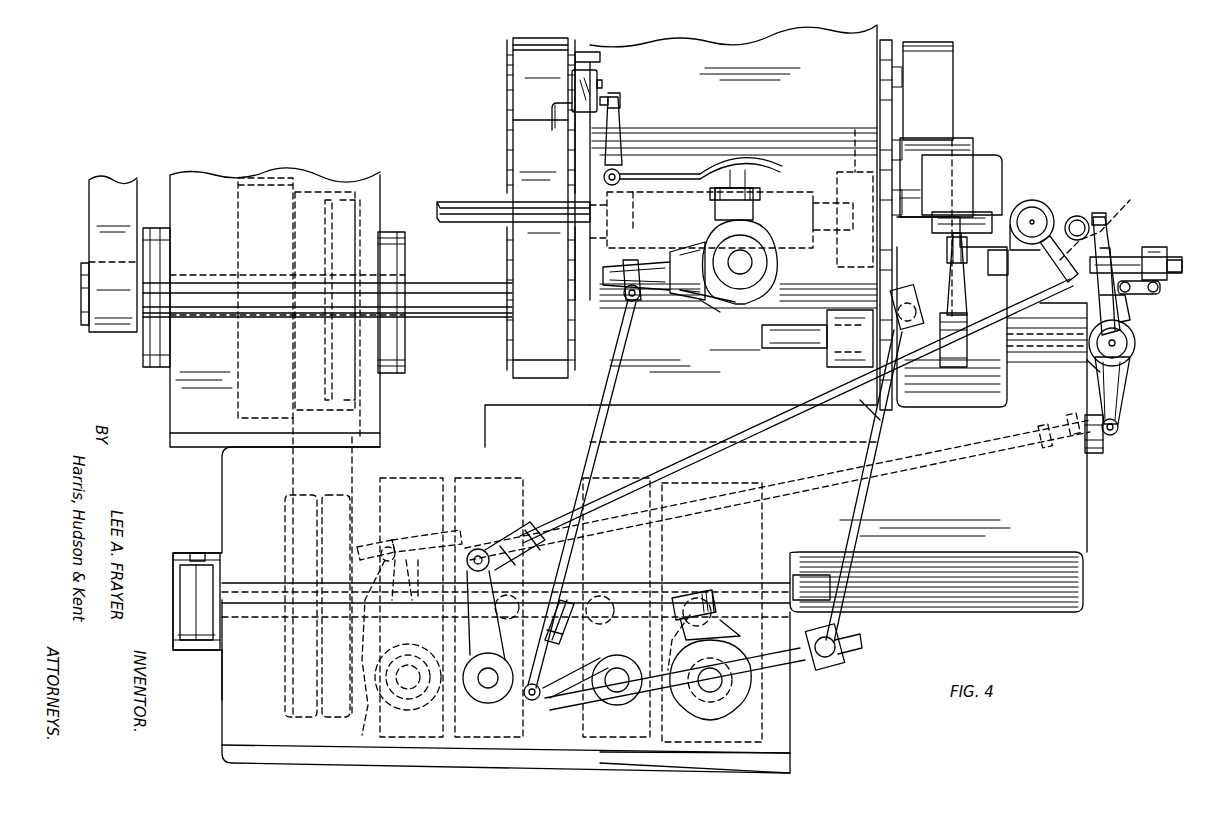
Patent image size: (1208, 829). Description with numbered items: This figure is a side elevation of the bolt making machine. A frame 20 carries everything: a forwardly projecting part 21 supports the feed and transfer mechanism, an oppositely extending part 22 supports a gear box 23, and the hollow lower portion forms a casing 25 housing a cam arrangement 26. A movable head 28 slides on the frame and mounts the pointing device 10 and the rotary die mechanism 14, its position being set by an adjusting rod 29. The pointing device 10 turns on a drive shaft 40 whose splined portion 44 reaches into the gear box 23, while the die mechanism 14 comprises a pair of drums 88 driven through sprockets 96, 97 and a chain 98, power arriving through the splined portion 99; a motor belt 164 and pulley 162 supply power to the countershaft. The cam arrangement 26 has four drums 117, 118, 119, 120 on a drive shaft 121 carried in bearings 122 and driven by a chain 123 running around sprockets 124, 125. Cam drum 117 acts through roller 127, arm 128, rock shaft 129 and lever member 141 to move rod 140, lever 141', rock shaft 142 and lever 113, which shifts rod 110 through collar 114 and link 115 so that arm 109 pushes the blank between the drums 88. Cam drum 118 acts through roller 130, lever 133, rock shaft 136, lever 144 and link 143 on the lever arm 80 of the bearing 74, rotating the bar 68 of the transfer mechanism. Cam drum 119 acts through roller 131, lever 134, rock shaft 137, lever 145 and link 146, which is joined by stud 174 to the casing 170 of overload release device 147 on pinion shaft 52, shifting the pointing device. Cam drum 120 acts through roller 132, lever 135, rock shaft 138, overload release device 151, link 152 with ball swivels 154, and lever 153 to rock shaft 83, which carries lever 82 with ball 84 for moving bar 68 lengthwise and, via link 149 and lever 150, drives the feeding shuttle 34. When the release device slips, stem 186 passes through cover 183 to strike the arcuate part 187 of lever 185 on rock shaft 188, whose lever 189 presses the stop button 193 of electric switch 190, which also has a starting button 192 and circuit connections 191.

The belt 164 is at (104, 211).
The pulley 162 is at (80, 332).
The gear box 23 is at (172, 420).
The sprocket or pulley 125 is at (308, 400).
The splined portion of shaft 99 is at (450, 320).
The oppositely extending part of frame 22 is at (224, 474).
The frame 20 is at (224, 686).
The casing 25 is at (790, 736).
The cam arrangement 26 is at (765, 724).
The bearings 122 is at (176, 563).
The drive shaft 121 is at (268, 612).
The sprocket or pulley 124 is at (285, 528).
The chain or belt 123 is at (353, 483).
The cam drum 117 is at (400, 478).
The cam drum 118 is at (480, 478).
The cam drum 119 is at (590, 480).
The cam drum 120 is at (695, 482).
The rock shaft 129 is at (390, 713).
The member 141 is at (366, 650).
The roller 127 is at (388, 561).
The arm 128 is at (428, 556).
The lever 144 is at (478, 549).
The rock shaft 136 is at (490, 704).
The lever 133 is at (488, 684).
The roller 130 is at (512, 596).
The roller 131 is at (605, 596).
The roller 132 is at (690, 598).
The lever 135 is at (718, 594).
The lever 134 is at (575, 645).
The lever 145 is at (540, 702).
The rock shaft 137 is at (620, 704).
The rock shaft 138 is at (705, 700).
The overload release device 151 is at (785, 692).
The ball swivels 154 is at (820, 668).
The link 146 is at (598, 416).
The link 143 is at (800, 398).
The link 152 is at (860, 500).
The lever 153 is at (880, 412).
The rod 140 is at (925, 462).
The sprocket or pulley 97 is at (513, 58).
The chain or belt 98 is at (516, 155).
The sprocket or pulley 96 is at (513, 360).
The splined portion of shaft 44 is at (470, 224).
The rock shaft 188 is at (577, 160).
The electric switch 190 is at (598, 86).
The starting or setting button 192 is at (602, 80).
The trip or stop button 193 is at (609, 99).
The circuit connections 191 is at (552, 112).
The lever 189 is at (619, 110).
The lever 185 is at (648, 180).
The arcuate part 187 is at (783, 170).
The stem 186 is at (715, 198).
The cover 183 is at (768, 200).
The rock shaft of pinion 52 is at (752, 260).
The overload release device 147 is at (680, 292).
The hollow casing 170 is at (740, 304).
The drive shaft 40 is at (633, 232).
The connecting stud or pin 174 is at (634, 302).
The movable head 28 is at (742, 50).
The die mechanism 10 is at (856, 132).
The rotary die mechanism 14 is at (945, 40).
The die holders 88 is at (955, 68).
The blank feeding shuttle 34 is at (975, 195).
The lever 150 is at (966, 276).
The link 149 is at (946, 255).
The rock shaft 83 is at (962, 362).
The arm 109 is at (1033, 205).
The bar 68 is at (1036, 205).
The support 74 is at (1060, 200).
The lever arm 80 is at (1078, 215).
The ball 84 is at (1130, 200).
The laterally slidable rod 110 is at (1108, 240).
The lever 82 is at (1110, 262).
The collar 114 is at (1160, 248).
The link 115 is at (1150, 295).
The lever 113 is at (1128, 318).
The rock shaft 142 is at (1120, 343).
The lever 141' is at (1131, 365).
The forwardly projecting part of frame 21 is at (1100, 380).
The adjusting rod 29 is at (1110, 440).